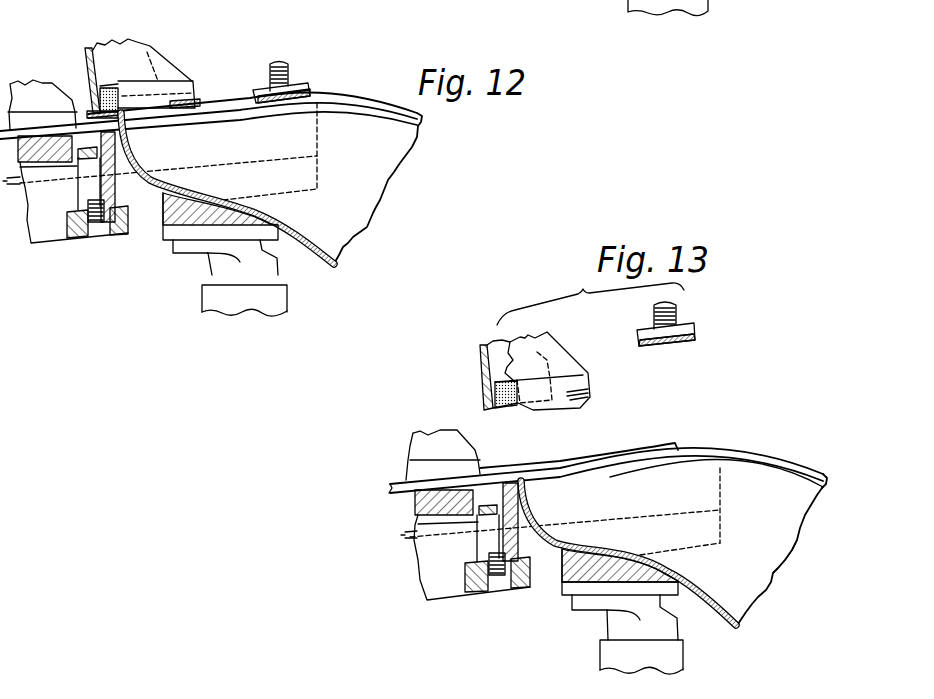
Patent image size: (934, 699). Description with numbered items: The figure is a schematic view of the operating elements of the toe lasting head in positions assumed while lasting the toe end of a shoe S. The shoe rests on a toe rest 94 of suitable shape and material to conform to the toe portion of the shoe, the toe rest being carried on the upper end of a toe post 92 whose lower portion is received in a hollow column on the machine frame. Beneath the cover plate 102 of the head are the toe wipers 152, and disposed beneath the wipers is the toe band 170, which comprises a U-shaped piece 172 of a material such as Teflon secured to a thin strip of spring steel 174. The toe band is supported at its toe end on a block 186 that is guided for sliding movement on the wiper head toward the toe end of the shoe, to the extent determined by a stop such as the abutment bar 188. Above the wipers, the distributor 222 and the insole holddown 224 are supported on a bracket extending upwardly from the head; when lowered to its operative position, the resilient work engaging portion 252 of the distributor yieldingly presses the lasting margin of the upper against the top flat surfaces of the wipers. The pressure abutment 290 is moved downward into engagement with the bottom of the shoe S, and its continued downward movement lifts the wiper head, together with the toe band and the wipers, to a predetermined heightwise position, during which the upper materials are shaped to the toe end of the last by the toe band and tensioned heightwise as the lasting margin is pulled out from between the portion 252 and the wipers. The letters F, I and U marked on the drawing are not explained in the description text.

In FIG. 12, the toe post 92 is at (288, 300).
In FIG. 13, the toe post 92 is at (684, 660).
In FIG. 12, the toe rest 94 is at (166, 240).
In FIG. 13, the toe rest 94 is at (560, 584).
In FIG. 12, the cover plate 102 is at (39, 81).
In FIG. 13, the cover plate 102 is at (433, 431).
In FIG. 12, the toe wipers 152 is at (56, 108).
In FIG. 13, the toe wipers 152 is at (462, 453).
In FIG. 12, the toe band 170 is at (324, 143).
In FIG. 13, the toe band 170 is at (725, 497).
In FIG. 12, the U-shaped piece 172 is at (126, 149).
In FIG. 13, the U-shaped piece 172 is at (527, 502).
In FIG. 12, the thin strip of spring steel 174 is at (128, 170).
In FIG. 13, the thin strip of spring steel 174 is at (523, 523).
In FIG. 12, the block 186 is at (51, 247).
In FIG. 13, the block 186 is at (444, 602).
In FIG. 12, the abutment bar 188 is at (77, 186).
In FIG. 13, the abutment bar 188 is at (477, 545).
In FIG. 12, the distributor 222 is at (88, 50).
In FIG. 13, the distributor 222 is at (479, 353).
In FIG. 12, the insole holddown 224 is at (194, 80).
In FIG. 13, the insole holddown 224 is at (566, 366).
In FIG. 12, the resilient work engaging portion 252 is at (99, 94).
In FIG. 13, the resilient work engaging portion 252 is at (483, 396).
In FIG. 12, the pressure abutment 290 is at (312, 91).
In FIG. 13, the pressure abutment 290 is at (696, 332).
In FIG. 12, the frame F is at (350, 208).
In FIG. 13, the frame F is at (766, 548).
In FIG. 12, the plate I is at (211, 121).
In FIG. 13, the plate I is at (813, 474).
In FIG. 13, the shoe S is at (772, 579).
In FIG. 12, the underlayer U is at (198, 106).